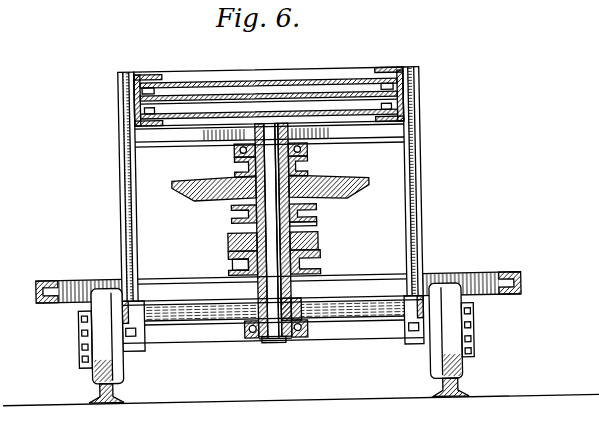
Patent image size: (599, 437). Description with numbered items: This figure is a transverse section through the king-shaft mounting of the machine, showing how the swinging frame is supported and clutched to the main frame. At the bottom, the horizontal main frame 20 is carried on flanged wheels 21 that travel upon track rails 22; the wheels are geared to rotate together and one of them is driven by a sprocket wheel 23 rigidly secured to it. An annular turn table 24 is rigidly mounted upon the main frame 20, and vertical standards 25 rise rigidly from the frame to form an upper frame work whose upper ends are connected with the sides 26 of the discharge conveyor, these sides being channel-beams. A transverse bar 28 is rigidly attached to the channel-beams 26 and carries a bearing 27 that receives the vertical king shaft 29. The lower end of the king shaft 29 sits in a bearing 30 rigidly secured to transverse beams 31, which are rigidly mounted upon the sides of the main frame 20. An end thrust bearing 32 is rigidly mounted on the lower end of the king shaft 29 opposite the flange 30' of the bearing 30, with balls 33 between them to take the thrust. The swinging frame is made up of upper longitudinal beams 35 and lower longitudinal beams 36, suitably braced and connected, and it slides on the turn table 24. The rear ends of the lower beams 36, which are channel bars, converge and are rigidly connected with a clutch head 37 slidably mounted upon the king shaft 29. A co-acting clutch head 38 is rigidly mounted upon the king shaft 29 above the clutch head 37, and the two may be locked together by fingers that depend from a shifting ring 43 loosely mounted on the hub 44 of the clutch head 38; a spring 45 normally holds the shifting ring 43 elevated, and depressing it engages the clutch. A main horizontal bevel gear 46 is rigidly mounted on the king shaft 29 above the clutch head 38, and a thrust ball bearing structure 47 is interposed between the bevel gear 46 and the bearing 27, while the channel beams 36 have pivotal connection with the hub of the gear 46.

The main frame 20 is at (140, 307).
The wheels 21 is at (88, 345).
The track rails 22 is at (93, 382).
The sprocket wheel 23 is at (473, 323).
The annular turn table 24 is at (498, 276).
The vertical standards 25 is at (122, 189).
The sides of discharge conveyor 26 is at (397, 70).
The bearing 27 is at (290, 124).
The transverse bar 28 is at (372, 132).
The king shaft 29 is at (265, 283).
The bearing 30 is at (310, 296).
The flange 30' is at (316, 329).
The transverse beams 31 is at (192, 312).
The end thrust bearing 32 is at (260, 340).
The balls 33 is at (244, 328).
The upper longitudinal beams 35 is at (312, 171).
The lower longitudinal beams 36 is at (230, 255).
The clutch head 37 is at (240, 264).
The clutch head 38 is at (319, 241).
The shifting ring 43 is at (318, 212).
The hub 44 is at (237, 207).
The spring 45 is at (318, 224).
The main horizontal bevel gear 46 is at (188, 178).
The thrust ball bearing structure 47 is at (310, 152).